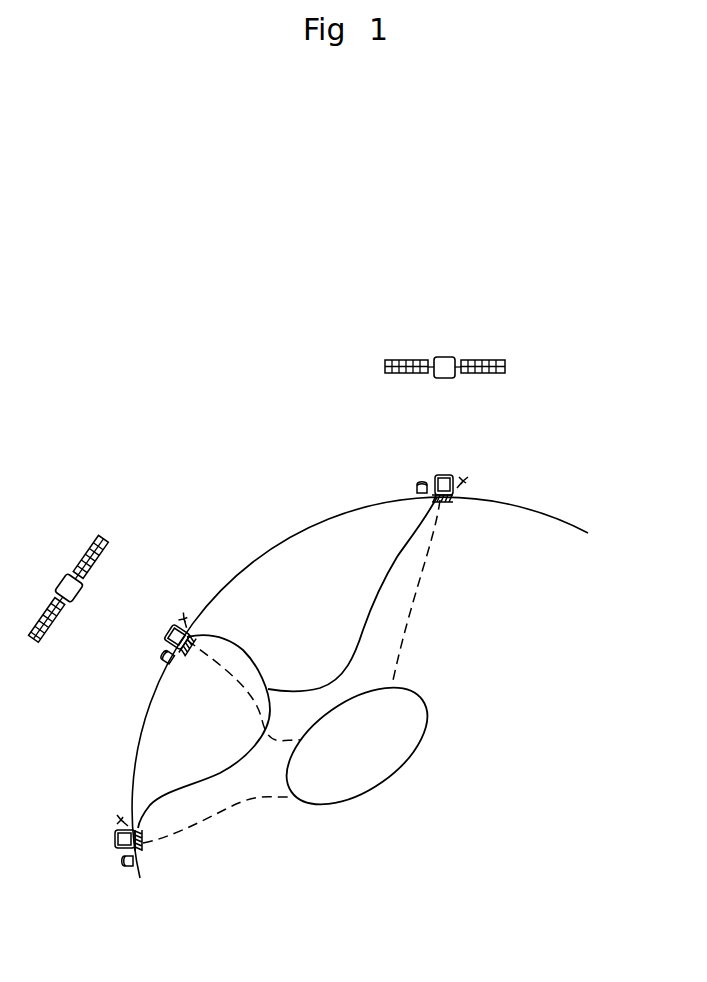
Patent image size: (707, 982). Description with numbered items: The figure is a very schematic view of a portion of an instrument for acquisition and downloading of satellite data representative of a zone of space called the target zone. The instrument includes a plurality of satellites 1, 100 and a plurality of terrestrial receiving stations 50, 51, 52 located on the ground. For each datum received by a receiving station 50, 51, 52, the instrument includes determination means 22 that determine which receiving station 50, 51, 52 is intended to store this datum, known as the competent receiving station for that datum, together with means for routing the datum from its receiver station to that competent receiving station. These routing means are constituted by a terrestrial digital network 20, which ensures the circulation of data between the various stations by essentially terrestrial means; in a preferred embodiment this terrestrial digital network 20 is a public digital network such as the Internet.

The satellite 1 is at (64, 576).
The satellite 100 is at (446, 360).
The terrestrial digital network 20 is at (363, 633).
The determination means 22 is at (425, 708).
The terrestrial receiving station 50 is at (115, 840).
The terrestrial receiving station 51 is at (170, 636).
The terrestrial receiving station 52 is at (442, 474).